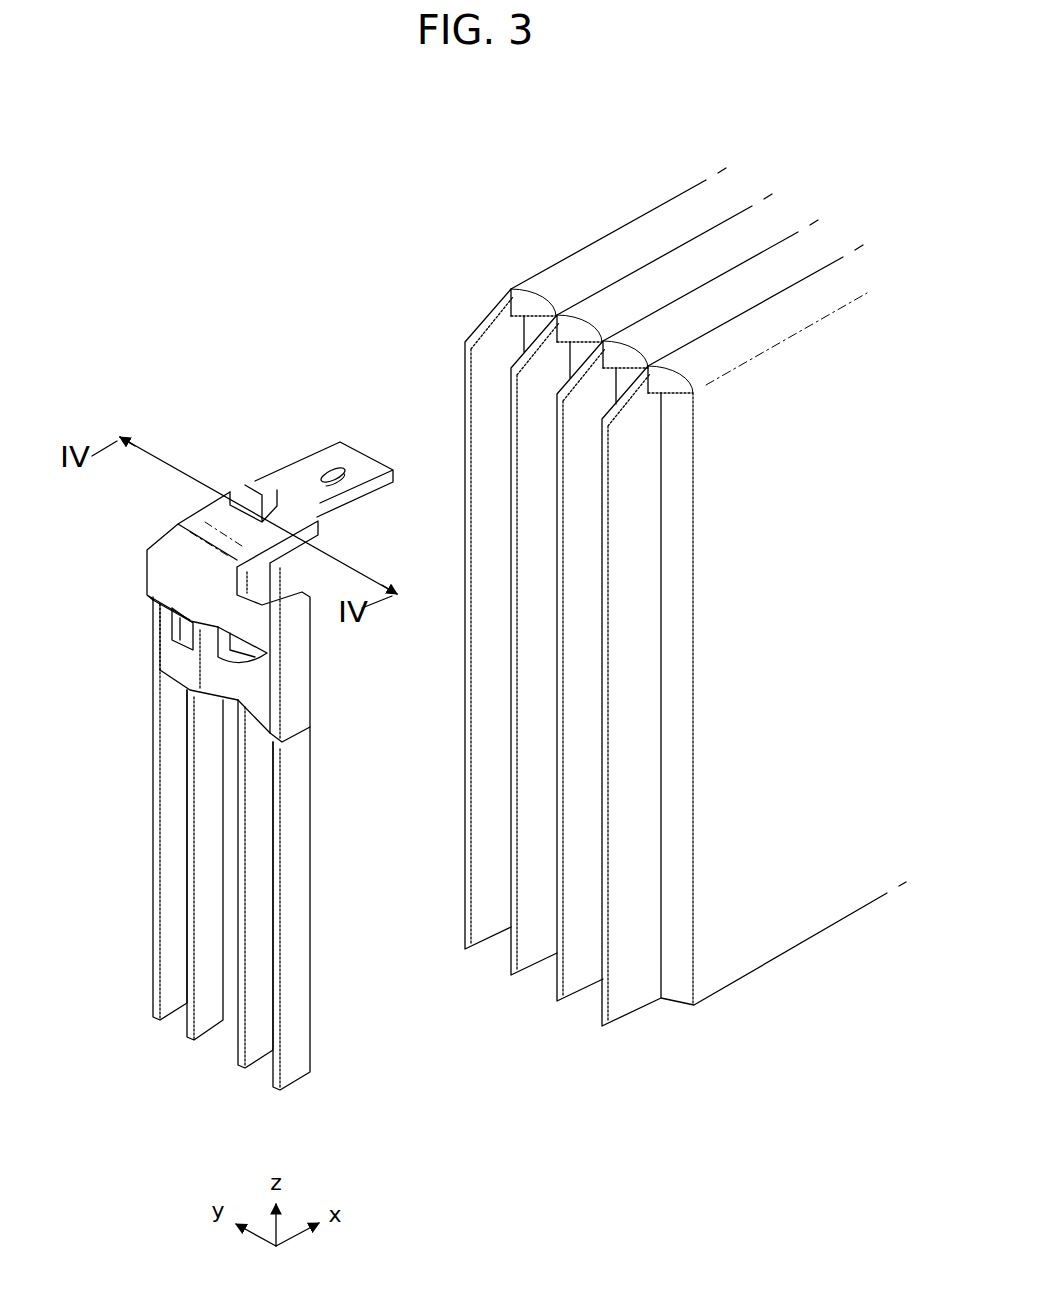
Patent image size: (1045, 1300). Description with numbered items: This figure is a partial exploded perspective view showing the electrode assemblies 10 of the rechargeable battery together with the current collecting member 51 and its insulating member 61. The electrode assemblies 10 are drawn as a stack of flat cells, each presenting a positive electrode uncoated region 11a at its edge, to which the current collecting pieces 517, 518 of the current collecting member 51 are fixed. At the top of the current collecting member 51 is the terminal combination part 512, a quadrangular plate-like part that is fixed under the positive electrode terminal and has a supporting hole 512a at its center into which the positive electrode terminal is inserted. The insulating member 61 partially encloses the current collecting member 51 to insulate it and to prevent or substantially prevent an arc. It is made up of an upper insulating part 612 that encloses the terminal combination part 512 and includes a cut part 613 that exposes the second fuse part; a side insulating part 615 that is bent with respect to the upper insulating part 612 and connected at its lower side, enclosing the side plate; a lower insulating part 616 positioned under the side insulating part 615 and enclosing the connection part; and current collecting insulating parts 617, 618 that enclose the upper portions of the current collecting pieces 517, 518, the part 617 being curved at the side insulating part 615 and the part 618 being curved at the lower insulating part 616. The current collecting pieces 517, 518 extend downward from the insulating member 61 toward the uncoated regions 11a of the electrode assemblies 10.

The battery cells 10 is at (628, 278).
The positive electrode uncoated region 11a is at (632, 993).
The current collecting member 51 is at (290, 456).
The terminal combination part 512 is at (333, 458).
The supporting hole 512a is at (346, 469).
The insulating member 61 is at (300, 686).
The upper insulating part 612 is at (180, 518).
The cut part 613 is at (233, 497).
The side insulating part 615 is at (185, 597).
The lower insulating part 616 is at (212, 668).
The current collecting insulating part 617 is at (300, 658).
The current collecting insulating part 618 is at (257, 702).
The current collecting piece 517 is at (268, 852).
The current collecting piece 518 is at (262, 962).